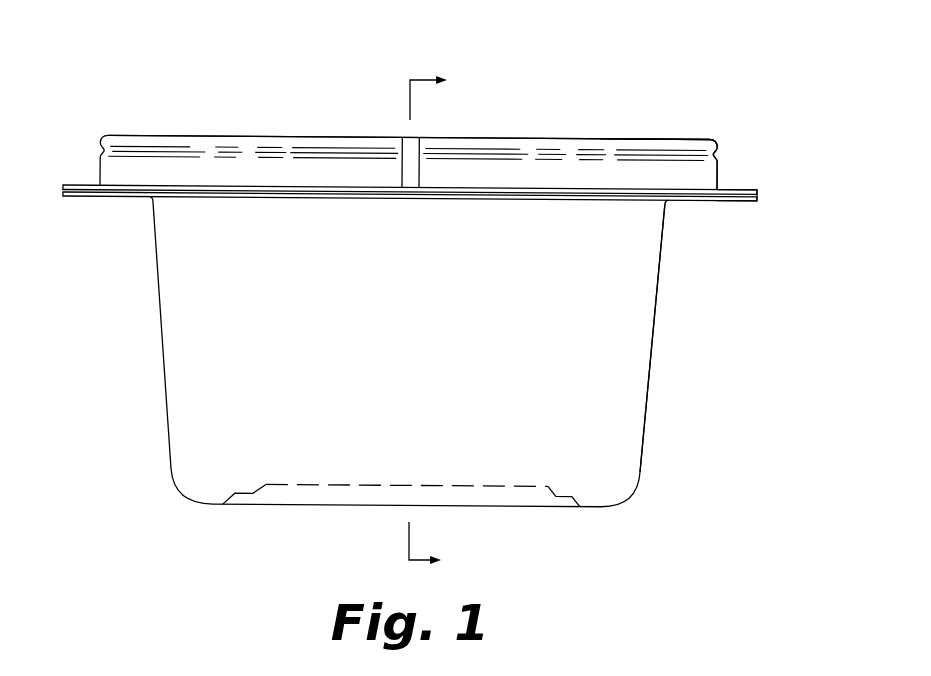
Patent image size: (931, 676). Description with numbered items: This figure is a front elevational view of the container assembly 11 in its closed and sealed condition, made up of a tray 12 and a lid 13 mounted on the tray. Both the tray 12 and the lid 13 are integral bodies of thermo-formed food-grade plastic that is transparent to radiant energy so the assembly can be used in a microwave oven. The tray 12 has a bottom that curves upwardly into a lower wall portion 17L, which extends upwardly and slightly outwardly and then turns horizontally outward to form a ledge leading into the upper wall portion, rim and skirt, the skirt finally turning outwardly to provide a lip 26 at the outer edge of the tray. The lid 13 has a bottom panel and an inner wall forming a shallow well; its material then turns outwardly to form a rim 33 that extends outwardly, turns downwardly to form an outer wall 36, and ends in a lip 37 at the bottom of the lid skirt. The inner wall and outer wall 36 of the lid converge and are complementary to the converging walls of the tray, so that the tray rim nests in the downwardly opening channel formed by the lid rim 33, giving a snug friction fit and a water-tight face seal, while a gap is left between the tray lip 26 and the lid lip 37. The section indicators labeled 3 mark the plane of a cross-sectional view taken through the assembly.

The section line 3- 3 is at (416, 320).
The container assembly 11 is at (700, 113).
The tray 12 is at (702, 306).
The lid 13 is at (513, 132).
The lower wall portion 17L is at (649, 432).
The lip 26 is at (740, 203).
The rim 33 is at (696, 136).
The outer wall 36 is at (721, 165).
The lip 37 is at (742, 187).